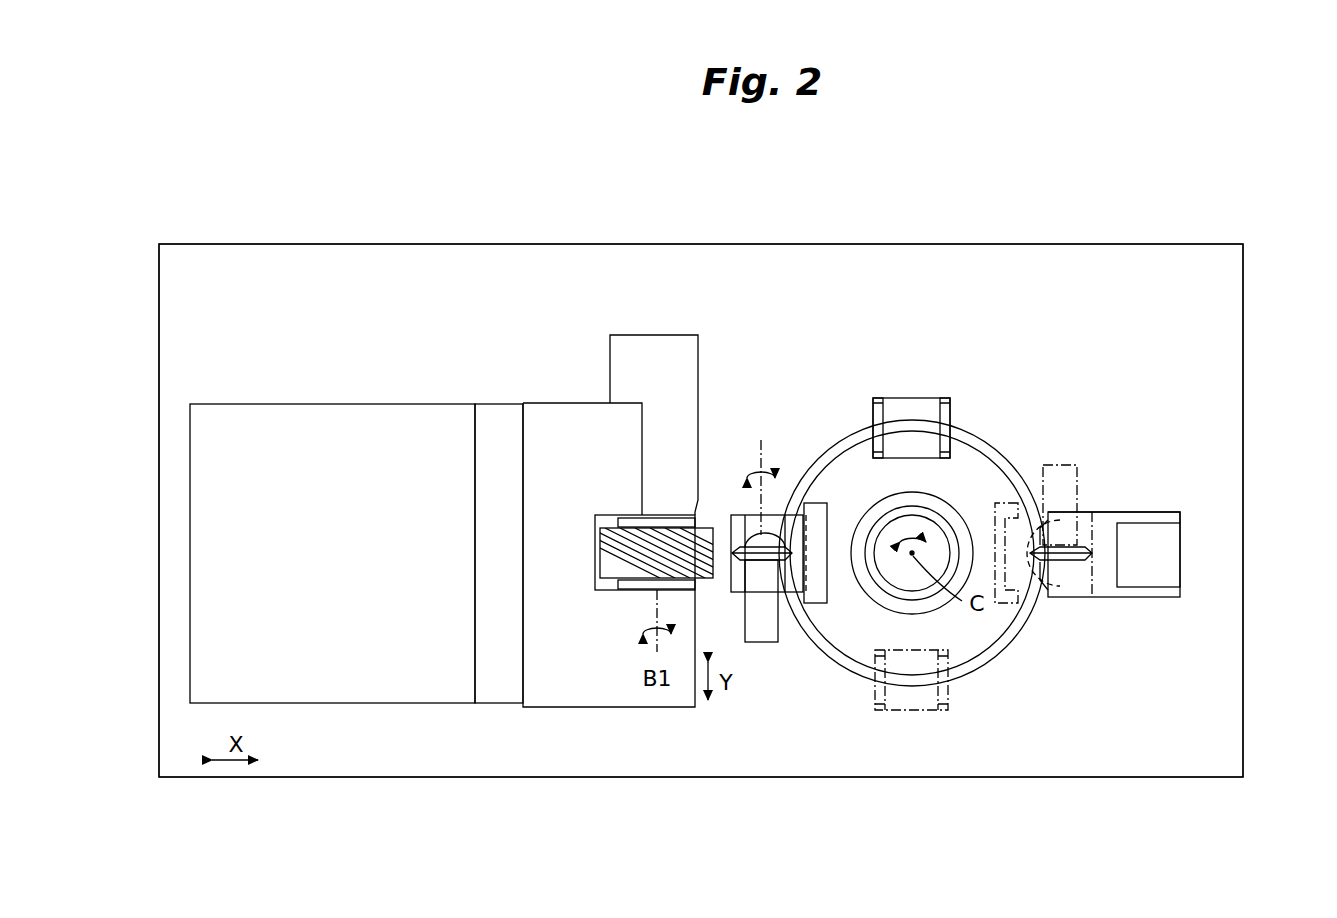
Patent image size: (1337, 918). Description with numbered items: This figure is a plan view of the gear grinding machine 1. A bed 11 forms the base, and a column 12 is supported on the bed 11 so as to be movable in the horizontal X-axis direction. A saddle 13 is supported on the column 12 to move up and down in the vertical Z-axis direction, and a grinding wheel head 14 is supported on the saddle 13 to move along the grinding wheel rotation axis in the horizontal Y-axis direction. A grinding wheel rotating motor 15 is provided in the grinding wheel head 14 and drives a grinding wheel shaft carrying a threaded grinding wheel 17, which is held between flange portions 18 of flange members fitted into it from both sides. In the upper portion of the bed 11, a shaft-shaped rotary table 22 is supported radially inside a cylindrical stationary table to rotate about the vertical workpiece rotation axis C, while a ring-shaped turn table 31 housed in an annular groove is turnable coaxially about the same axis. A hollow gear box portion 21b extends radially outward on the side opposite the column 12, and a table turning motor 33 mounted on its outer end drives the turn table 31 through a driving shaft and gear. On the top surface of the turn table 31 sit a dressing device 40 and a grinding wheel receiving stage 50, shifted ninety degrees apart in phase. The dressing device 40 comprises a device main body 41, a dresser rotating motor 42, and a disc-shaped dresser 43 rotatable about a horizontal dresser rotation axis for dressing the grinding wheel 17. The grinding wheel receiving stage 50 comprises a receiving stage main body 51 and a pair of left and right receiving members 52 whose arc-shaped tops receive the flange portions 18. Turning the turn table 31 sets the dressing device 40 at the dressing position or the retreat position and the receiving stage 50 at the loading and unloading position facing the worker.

The gear grinding machine 1 is at (1147, 222).
The bed 11 is at (318, 244).
The column 12 is at (408, 705).
The saddle 13 is at (501, 705).
The grinding wheel head 14 is at (590, 707).
The grinding wheel rotating motor 15 is at (657, 335).
The threaded grinding wheel 17 is at (605, 553).
The flange portions 18 is at (618, 522).
The gear box portion 21b is at (1160, 512).
The rotary table 22 is at (915, 582).
The turn table 31 is at (858, 657).
The table turning motor 33 is at (1180, 563).
The dressing device 40 is at (722, 580).
The device main body 41 is at (808, 605).
The dresser rotating motor 42 is at (780, 593).
The dresser 43 is at (762, 642).
The grinding wheel receiving stage 50 is at (957, 418).
The receiving stage main body 51 is at (905, 398).
The receiving members 52 is at (873, 398).